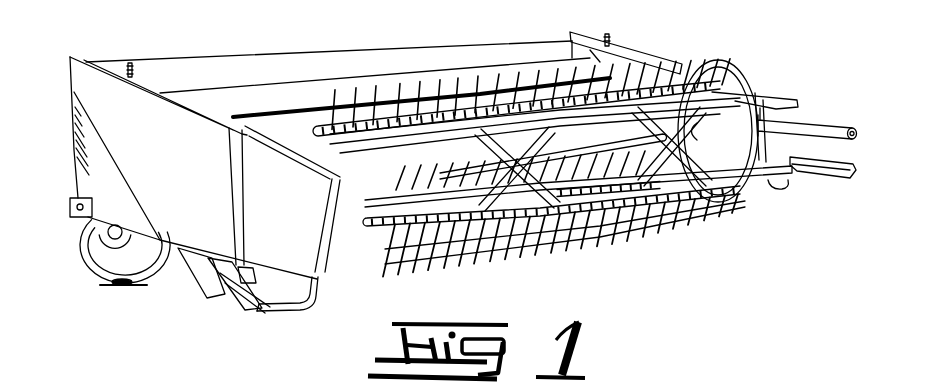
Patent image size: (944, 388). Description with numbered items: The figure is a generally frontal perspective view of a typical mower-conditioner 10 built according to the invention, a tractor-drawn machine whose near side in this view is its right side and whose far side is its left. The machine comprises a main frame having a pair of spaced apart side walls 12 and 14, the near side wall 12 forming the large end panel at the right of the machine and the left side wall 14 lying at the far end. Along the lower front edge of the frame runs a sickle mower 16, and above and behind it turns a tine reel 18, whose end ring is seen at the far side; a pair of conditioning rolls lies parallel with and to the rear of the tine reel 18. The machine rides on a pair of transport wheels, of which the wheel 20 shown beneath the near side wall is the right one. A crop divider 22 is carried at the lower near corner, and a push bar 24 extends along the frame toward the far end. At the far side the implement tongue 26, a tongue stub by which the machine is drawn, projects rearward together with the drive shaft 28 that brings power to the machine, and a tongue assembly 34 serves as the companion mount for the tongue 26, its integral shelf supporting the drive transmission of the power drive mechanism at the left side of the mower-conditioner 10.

The mower-conditioner 10 is at (381, 27).
The side wall 12 is at (97, 62).
The side wall 14 is at (632, 47).
The sickle mower 16 is at (497, 262).
The tine reel 18 is at (740, 65).
The transport wheel 20 is at (90, 257).
The crop divider 22 is at (355, 307).
The push bar 24 is at (765, 187).
The implement tongue 26 is at (818, 178).
The drive shaft 28 is at (813, 123).
The tongue assembly 34 is at (770, 92).